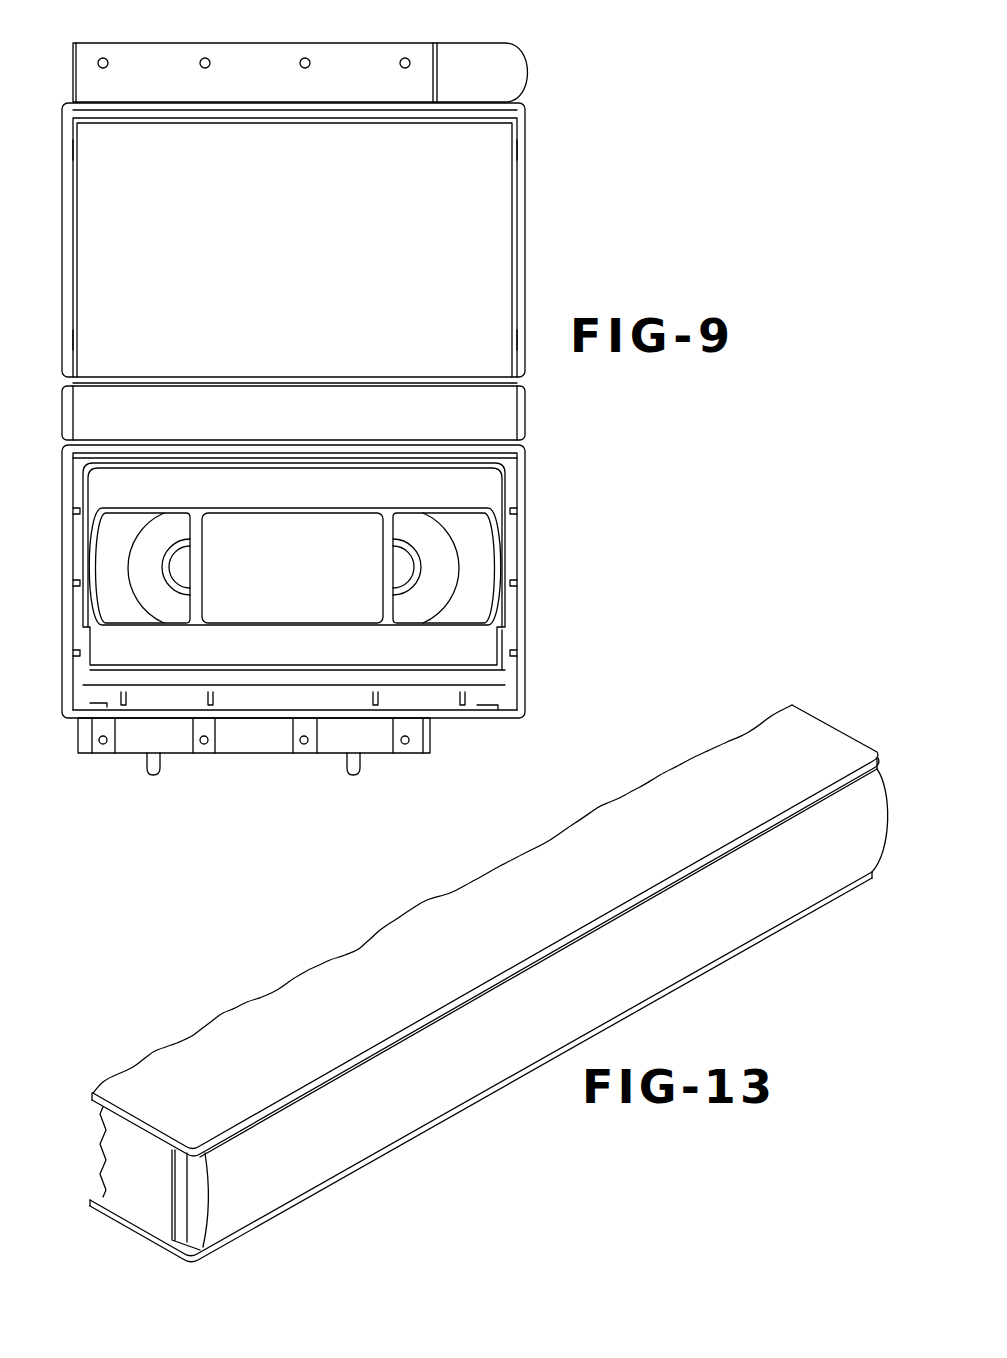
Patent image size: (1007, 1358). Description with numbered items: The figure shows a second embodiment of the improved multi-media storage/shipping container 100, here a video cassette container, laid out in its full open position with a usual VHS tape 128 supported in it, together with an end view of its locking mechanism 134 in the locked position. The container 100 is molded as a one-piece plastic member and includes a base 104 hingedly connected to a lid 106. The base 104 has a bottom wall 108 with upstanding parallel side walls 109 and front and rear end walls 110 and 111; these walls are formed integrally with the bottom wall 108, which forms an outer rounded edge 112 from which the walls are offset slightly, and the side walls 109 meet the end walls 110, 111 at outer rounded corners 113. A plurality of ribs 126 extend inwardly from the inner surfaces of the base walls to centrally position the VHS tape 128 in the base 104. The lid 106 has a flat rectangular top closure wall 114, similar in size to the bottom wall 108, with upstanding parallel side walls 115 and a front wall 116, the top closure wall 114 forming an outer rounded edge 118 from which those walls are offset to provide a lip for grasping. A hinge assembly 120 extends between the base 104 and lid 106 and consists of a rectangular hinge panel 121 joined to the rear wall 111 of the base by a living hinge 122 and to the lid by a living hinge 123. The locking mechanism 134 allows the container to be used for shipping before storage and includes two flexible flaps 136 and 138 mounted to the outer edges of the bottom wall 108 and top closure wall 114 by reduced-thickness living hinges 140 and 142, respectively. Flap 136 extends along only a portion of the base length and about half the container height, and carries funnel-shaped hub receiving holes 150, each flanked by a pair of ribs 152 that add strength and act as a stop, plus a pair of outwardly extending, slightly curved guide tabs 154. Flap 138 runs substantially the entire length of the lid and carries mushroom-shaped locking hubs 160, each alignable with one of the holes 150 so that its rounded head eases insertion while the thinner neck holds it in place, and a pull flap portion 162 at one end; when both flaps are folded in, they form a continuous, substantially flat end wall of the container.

In FIG. 9, the storage container 100 is at (600, 130).
In FIG. 13, the storage container 100 is at (225, 992).
In FIG. 9, the base 104 is at (530, 583).
In FIG. 9, the lid 106 is at (530, 190).
In FIG. 9, the bottom wall 108 is at (505, 703).
In FIG. 13, the bottom wall 108 is at (133, 1220).
In FIG. 9, the side walls 109 is at (517, 612).
In FIG. 9, the front end wall 110 is at (443, 713).
In FIG. 9, the rear end wall 111 is at (221, 456).
In FIG. 9, the outer rounded edge 112 is at (527, 645).
In FIG. 13, the outer rounded edge 112 is at (146, 1238).
In FIG. 9, the outer rounded corners 113 is at (524, 720).
In FIG. 9, the top closure wall 114 is at (478, 286).
In FIG. 13, the top closure wall 114 is at (218, 1035).
In FIG. 9, the side walls 115 is at (76, 252).
In FIG. 9, the front wall 116 is at (237, 123).
In FIG. 9, the outer rounded edge 118 is at (527, 216).
In FIG. 13, the outer rounded edge 118 is at (823, 723).
In FIG. 9, the hinge assembly 120 is at (483, 418).
In FIG. 9, the hinge panel 121 is at (355, 405).
In FIG. 9, the living hinge 122 is at (422, 382).
In FIG. 9, the living hinge 123 is at (295, 448).
In FIG. 9, the ribs 126 is at (510, 512).
In FIG. 9, the VHS tape 128 is at (318, 579).
In FIG. 13, the locking mechanism 134 is at (400, 1153).
In FIG. 9, the flap 136 is at (247, 750).
In FIG. 9, the flap 138 is at (355, 40).
In FIG. 13, the flap 138 is at (446, 1106).
In FIG. 9, the living hinge 140 is at (376, 727).
In FIG. 9, the living hinge 142 is at (157, 103).
In FIG. 13, the living hinge 142 is at (466, 1003).
In FIG. 9, the hub receiving holes 150 is at (104, 747).
In FIG. 9, the ribs 152 is at (292, 742).
In FIG. 9, the guide tabs 154 is at (150, 776).
In FIG. 9, the locking hubs 160 is at (304, 70).
In FIG. 9, the pull flap portion 162 is at (508, 77).
In FIG. 13, the pull flap portion 162 is at (868, 842).